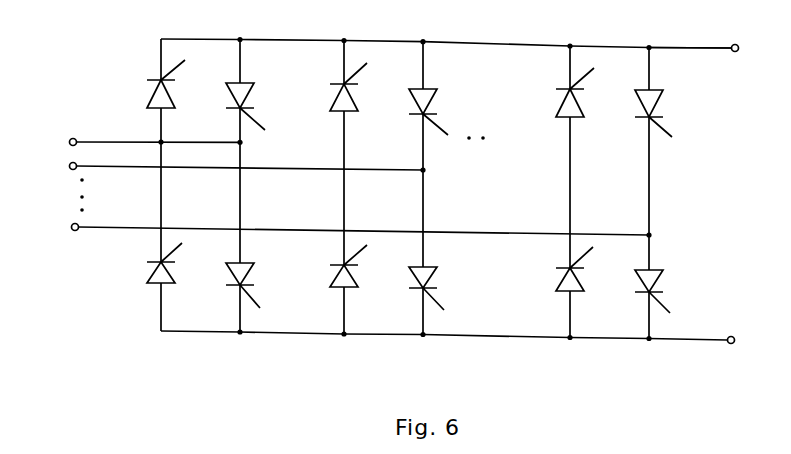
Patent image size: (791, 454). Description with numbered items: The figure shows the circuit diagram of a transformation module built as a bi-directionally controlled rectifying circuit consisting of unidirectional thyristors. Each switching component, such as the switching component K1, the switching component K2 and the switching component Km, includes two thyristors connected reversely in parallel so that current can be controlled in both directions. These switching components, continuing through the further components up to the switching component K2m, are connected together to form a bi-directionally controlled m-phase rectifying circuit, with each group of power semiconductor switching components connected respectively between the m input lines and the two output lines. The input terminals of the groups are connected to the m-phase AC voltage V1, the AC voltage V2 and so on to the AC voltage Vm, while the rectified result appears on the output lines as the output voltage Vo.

The thyristor switch K1 is at (132, 102).
The thyristor switch K2 is at (315, 107).
The thyristor switch Km is at (540, 111).
The thyristor switch K2m is at (537, 287).
The input voltage terminal V1 is at (136, 141).
The input voltage terminal V2 is at (228, 168).
The input voltage terminal Vm is at (339, 226).
The output voltage terminal Vo is at (696, 69).